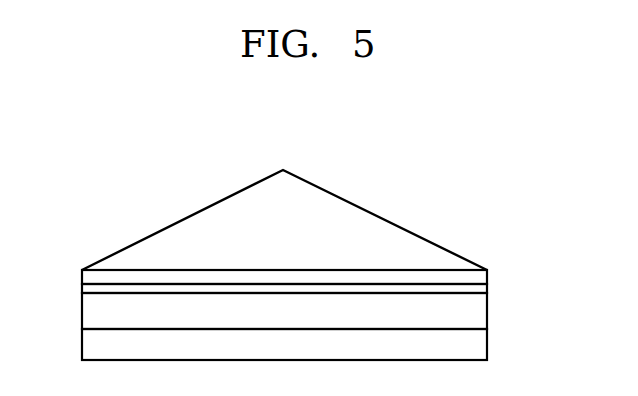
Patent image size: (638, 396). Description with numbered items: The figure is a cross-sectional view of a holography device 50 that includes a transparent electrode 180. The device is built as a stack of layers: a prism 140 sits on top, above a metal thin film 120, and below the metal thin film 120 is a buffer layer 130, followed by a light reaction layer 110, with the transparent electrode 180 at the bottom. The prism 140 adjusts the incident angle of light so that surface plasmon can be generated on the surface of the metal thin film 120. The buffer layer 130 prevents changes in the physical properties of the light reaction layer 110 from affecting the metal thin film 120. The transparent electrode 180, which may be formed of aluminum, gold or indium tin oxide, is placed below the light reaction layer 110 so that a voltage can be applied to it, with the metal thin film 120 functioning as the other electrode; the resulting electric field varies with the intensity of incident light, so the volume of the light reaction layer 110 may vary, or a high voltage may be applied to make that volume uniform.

The holography device 50 is at (92, 178).
The prism 140 is at (398, 235).
The metal thin film 120 is at (488, 274).
The buffer layer 130 is at (488, 286).
The light reaction layer 110 is at (488, 320).
The transparent electrode 180 is at (488, 347).